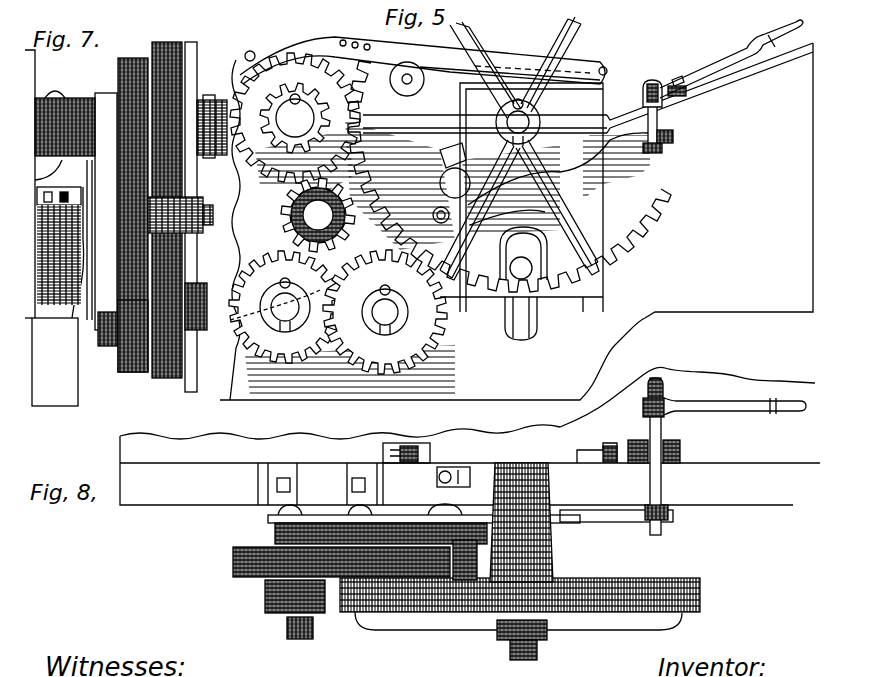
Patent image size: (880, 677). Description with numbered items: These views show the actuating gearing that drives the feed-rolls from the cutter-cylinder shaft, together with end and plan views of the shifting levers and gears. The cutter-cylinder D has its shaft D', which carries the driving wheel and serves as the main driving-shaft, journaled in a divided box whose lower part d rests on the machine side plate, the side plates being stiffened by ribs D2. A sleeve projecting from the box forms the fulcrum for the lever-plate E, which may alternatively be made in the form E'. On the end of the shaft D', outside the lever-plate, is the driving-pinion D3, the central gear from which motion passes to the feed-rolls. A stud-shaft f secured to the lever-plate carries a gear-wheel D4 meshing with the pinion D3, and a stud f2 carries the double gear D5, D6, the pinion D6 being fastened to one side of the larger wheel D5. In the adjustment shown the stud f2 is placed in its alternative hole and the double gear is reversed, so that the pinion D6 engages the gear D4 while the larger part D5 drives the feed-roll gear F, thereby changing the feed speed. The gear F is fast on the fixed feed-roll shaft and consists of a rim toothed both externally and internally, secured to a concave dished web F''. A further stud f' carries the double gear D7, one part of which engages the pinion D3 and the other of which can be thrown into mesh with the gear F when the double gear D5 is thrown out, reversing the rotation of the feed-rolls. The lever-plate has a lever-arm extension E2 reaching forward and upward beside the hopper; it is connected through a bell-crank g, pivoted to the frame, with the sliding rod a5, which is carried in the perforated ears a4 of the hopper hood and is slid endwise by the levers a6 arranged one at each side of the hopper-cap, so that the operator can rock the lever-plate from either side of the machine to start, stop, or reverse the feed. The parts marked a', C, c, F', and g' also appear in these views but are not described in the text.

In FIG. 7, the bearing bracket a' is at (65, 204).
In FIG. 8, the bearing bracket a' is at (340, 484).
In FIG. 7, the stud-shaft f is at (98, 327).
In FIG. 5, the stud-shaft f is at (285, 305).
In FIG. 7, the double gear D7 is at (134, 50).
In FIG. 5, the double gear D7 is at (270, 82).
In FIG. 8, the double gear D7 is at (233, 572).
In FIG. 7, the gear-wheel D4 is at (120, 372).
In FIG. 5, the gear-wheel D4 is at (285, 307).
In FIG. 7, the gear-wheel D5 is at (182, 376).
In FIG. 5, the gear-wheel D5 is at (398, 340).
In FIG. 7, the feed-roll gear-wheel F is at (190, 206).
In FIG. 7, the cutter-cylinder D is at (206, 147).
In FIG. 7, the driving-pinion D3 is at (150, 218).
In FIG. 5, the driving-pinion D3 is at (228, 146).
In FIG. 8, the driving-pinion D3 is at (342, 578).
In FIG. 7, the stiffening-ribs D2 is at (206, 222).
In FIG. 8, the stiffening-ribs D2 is at (258, 491).
In FIG. 7, the stud f2 is at (196, 305).
In FIG. 5, the stud f2 is at (385, 310).
In FIG. 5, the lever-plate E is at (462, 176).
In FIG. 8, the lever-plate E is at (487, 565).
In FIG. 5, the stud f' is at (295, 118).
In FIG. 5, the cutter-cylinder shaft D' is at (318, 215).
In FIG. 5, the curved link bar C is at (423, 57).
In FIG. 5, the pivot c is at (426, 64).
In FIG. 5, the spoke wheel hub F' is at (530, 120).
In FIG. 5, the lever-plate E' is at (588, 147).
In FIG. 5, the lever-arm extension E2 is at (558, 179).
In FIG. 8, the lever-arm extension E2 is at (606, 522).
In FIG. 5, the post head g' is at (645, 105).
In FIG. 5, the bell-crank g is at (658, 132).
In FIG. 8, the bell-crank g is at (669, 456).
In FIG. 5, the sliding rod a5 is at (668, 78).
In FIG. 8, the sliding rod a5 is at (662, 397).
In FIG. 5, the levers a6 is at (728, 62).
In FIG. 8, the levers a6 is at (746, 401).
In FIG. 8, the lower box part d is at (275, 507).
In FIG. 8, the pinion D6 is at (428, 565).
In FIG. 8, the dished web F'' is at (518, 636).
In FIG. 8, the perforated ears a4 is at (640, 444).